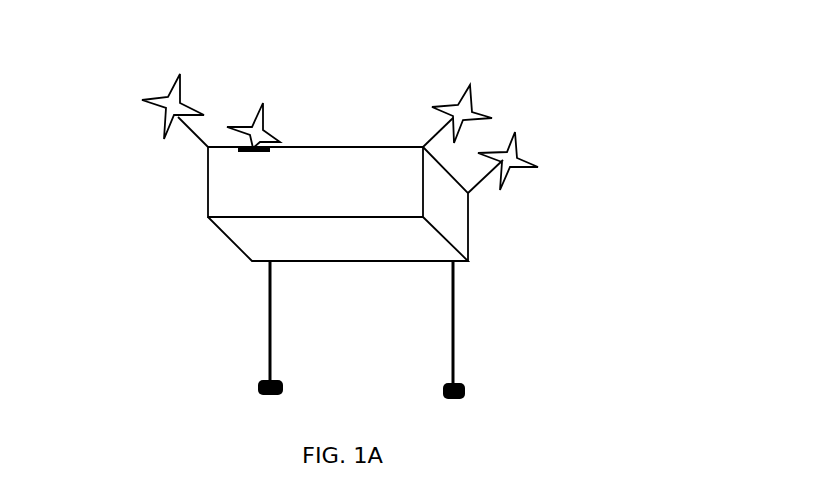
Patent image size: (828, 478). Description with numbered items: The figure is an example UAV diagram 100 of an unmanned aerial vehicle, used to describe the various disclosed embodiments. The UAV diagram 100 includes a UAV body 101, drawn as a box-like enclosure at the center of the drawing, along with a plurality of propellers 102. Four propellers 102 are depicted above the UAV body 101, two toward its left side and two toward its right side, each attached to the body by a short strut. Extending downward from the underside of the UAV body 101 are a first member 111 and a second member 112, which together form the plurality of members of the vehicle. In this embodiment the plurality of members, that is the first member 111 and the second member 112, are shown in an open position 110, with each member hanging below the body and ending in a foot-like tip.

The UAV diagram 100 is at (620, 179).
The UAV body 101 is at (397, 228).
The plurality of propellers 102 is at (345, 105).
The open position 110 is at (236, 352).
The first member 111 is at (218, 328).
The second member 112 is at (507, 330).